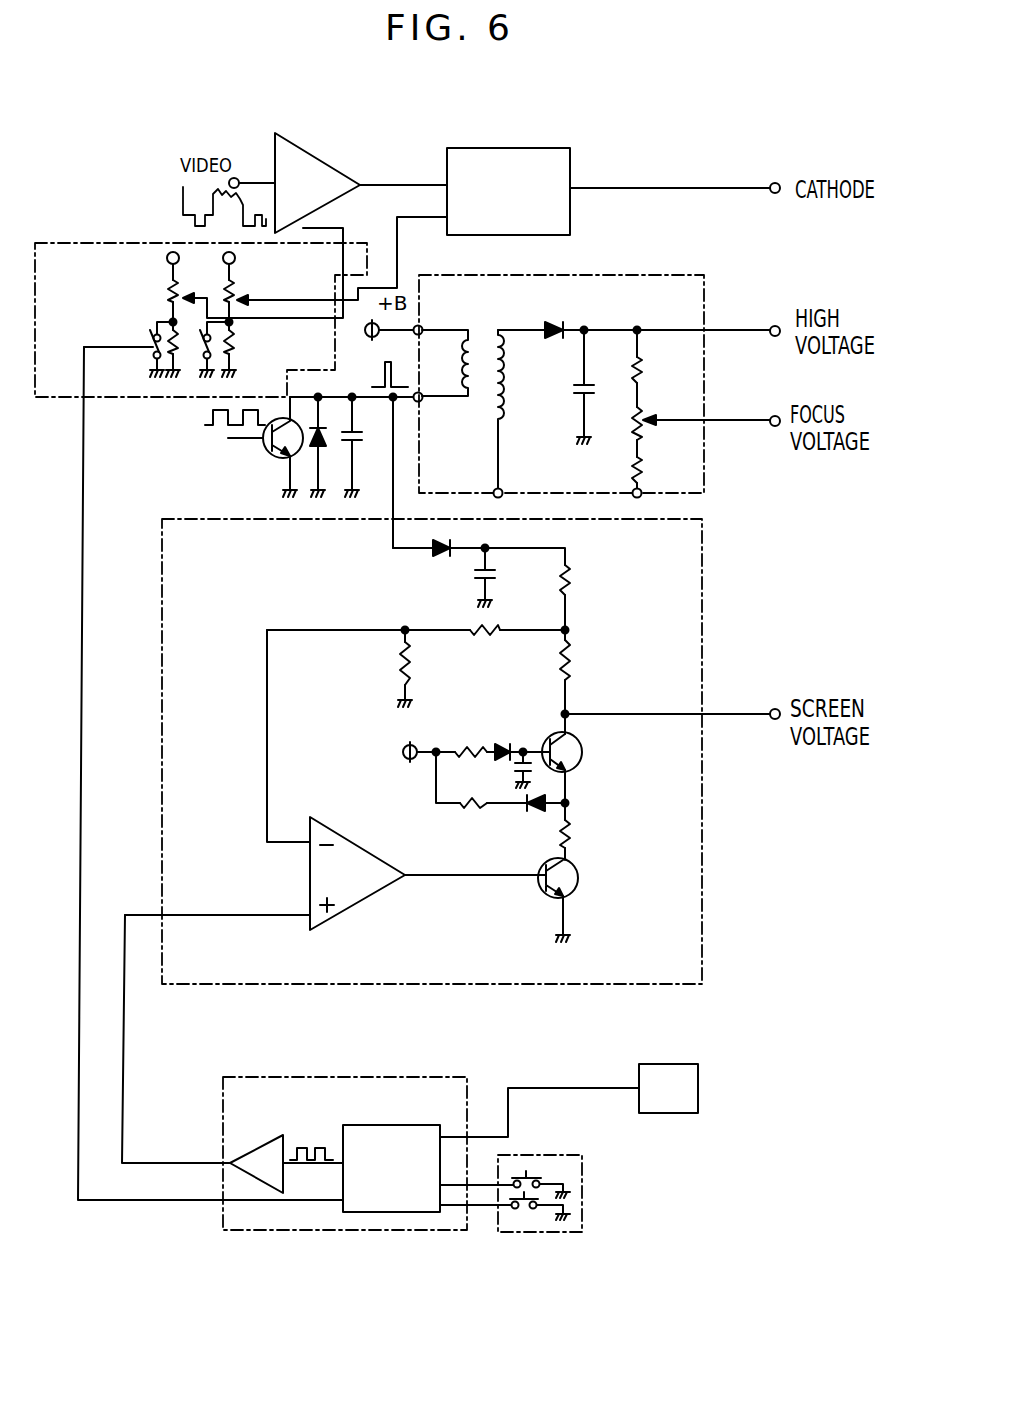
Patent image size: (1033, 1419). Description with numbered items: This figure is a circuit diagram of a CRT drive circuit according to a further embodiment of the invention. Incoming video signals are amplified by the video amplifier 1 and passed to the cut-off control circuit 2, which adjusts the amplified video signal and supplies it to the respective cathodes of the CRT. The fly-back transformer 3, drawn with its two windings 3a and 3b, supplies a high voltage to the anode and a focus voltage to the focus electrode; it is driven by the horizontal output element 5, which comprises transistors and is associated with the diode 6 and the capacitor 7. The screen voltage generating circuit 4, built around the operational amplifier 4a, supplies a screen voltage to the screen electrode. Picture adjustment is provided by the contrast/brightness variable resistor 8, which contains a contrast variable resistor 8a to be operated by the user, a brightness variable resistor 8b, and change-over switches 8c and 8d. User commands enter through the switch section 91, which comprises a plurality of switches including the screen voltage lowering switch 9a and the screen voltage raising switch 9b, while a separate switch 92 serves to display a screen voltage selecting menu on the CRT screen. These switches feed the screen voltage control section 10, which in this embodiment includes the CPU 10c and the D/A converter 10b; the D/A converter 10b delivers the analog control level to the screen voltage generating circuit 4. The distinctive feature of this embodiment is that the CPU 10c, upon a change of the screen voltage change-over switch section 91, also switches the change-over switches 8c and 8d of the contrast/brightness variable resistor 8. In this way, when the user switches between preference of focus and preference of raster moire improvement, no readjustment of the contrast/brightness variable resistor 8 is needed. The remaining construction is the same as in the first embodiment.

The video amplifier 1 is at (322, 158).
The cut-off control circuit 2 is at (528, 148).
The fly-back transformer 3 is at (594, 358).
The primary winding 3a is at (478, 340).
The secondary winding 3b is at (494, 333).
The screen voltage generating circuit 4 is at (447, 751).
The operational amplifier 4a is at (357, 840).
The horizontal output element 5 is at (273, 456).
The diode 6 is at (323, 452).
The capacitor 7 is at (365, 442).
The contrast/brightness variable resistor 8 is at (201, 355).
The contrast variable resistor 8a is at (167, 304).
The brightness variable resistor 8b is at (223, 297).
The change-over switch 8c is at (151, 358).
The change-over switch 8d is at (203, 360).
The screen voltage lowering switch 9a is at (544, 1176).
The screen voltage raising switch 9b is at (530, 1218).
The switch section 91 is at (573, 1210).
The switch 92 is at (678, 1072).
The screen voltage control section 10 is at (345, 1159).
The D/A converter 10b is at (263, 1194).
The CPU 10c is at (398, 1212).